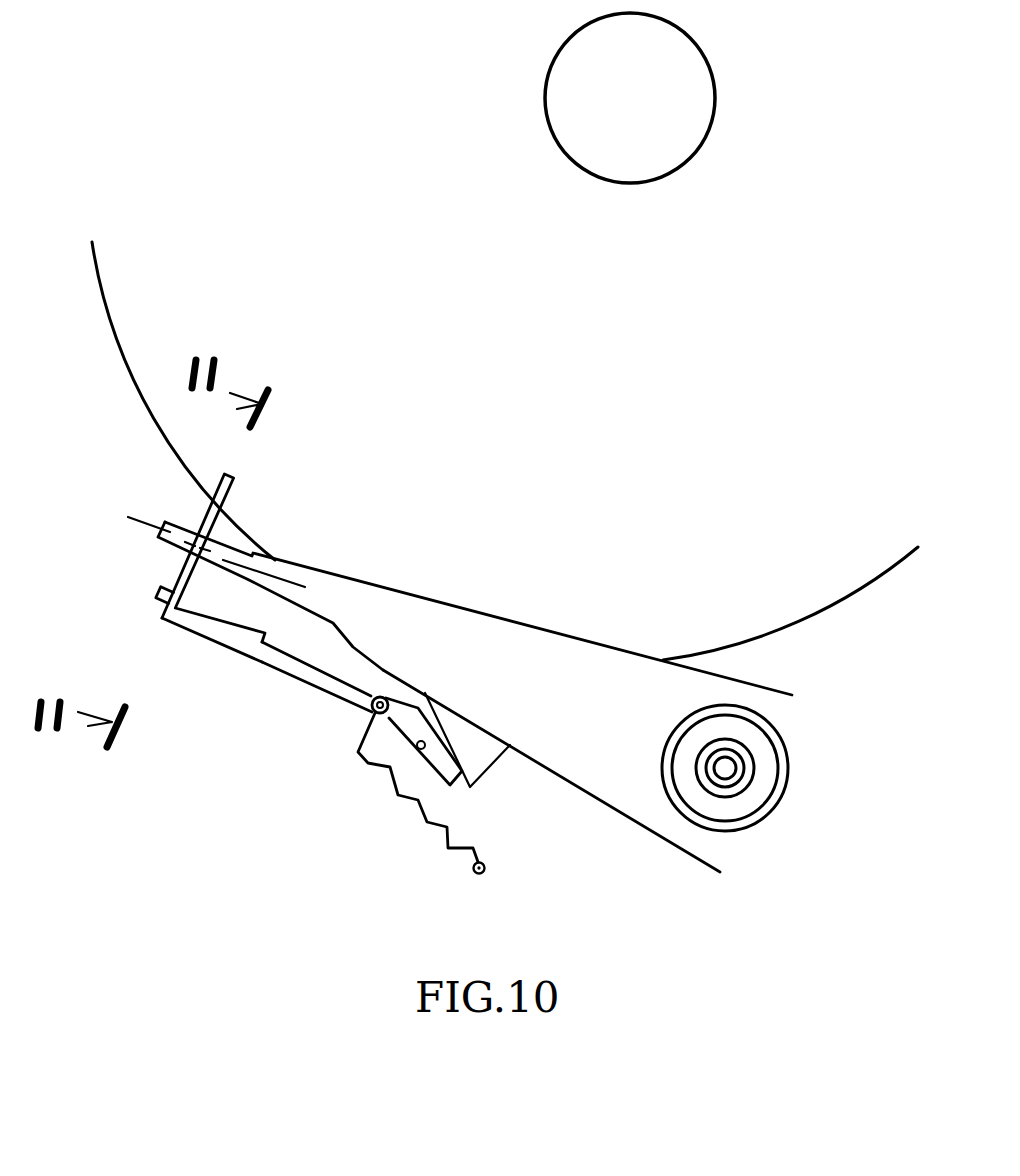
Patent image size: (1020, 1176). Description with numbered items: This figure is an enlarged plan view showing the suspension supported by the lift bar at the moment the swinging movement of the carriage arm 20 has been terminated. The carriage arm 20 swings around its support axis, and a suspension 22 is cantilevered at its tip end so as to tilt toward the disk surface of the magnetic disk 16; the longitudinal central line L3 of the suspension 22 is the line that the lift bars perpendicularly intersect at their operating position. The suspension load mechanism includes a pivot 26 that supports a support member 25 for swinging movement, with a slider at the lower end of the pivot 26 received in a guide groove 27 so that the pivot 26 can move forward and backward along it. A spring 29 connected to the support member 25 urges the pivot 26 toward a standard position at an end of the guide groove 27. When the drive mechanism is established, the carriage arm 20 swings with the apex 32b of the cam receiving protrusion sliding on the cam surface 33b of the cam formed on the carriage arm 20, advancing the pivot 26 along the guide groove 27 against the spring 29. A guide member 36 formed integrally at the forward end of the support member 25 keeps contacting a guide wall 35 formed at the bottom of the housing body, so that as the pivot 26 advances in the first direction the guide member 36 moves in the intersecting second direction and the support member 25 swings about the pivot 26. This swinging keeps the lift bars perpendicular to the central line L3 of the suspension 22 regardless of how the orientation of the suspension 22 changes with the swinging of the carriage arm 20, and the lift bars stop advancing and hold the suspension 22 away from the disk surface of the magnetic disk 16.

The magnetic disk 16 is at (158, 408).
The longitudinal central line of the suspension L3 is at (152, 518).
The suspension 22 is at (240, 547).
The carriage arm 20 is at (618, 808).
The guide member 36 is at (166, 625).
The guide wall 35 is at (153, 590).
The support member 25 is at (257, 658).
The pivot 26 is at (368, 711).
The apex of the cam receiving protrusion 32b is at (427, 700).
The cam surface of the cam 33b is at (463, 792).
The guide groove 27 is at (422, 750).
The spring 29 is at (447, 855).